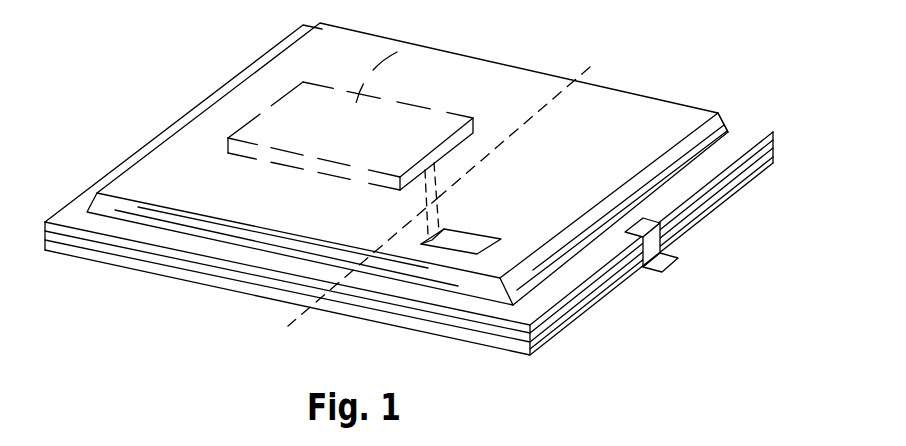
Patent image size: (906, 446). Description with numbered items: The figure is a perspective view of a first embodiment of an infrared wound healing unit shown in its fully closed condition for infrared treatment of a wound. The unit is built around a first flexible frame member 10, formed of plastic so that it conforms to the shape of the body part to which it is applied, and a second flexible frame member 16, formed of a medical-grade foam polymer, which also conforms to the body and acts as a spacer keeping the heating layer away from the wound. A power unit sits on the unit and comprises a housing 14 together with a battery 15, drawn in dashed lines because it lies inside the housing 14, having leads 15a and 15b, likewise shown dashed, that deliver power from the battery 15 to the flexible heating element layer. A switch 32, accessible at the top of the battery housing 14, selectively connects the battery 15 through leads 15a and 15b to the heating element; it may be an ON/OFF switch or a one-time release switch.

The first flexible frame member 10 is at (557, 320).
The second flexible frame member 16 is at (538, 352).
The battery 15 is at (410, 42).
The lead 15a is at (528, 117).
The lead 15b is at (340, 271).
The housing 14 is at (703, 133).
The switch 32 is at (453, 247).